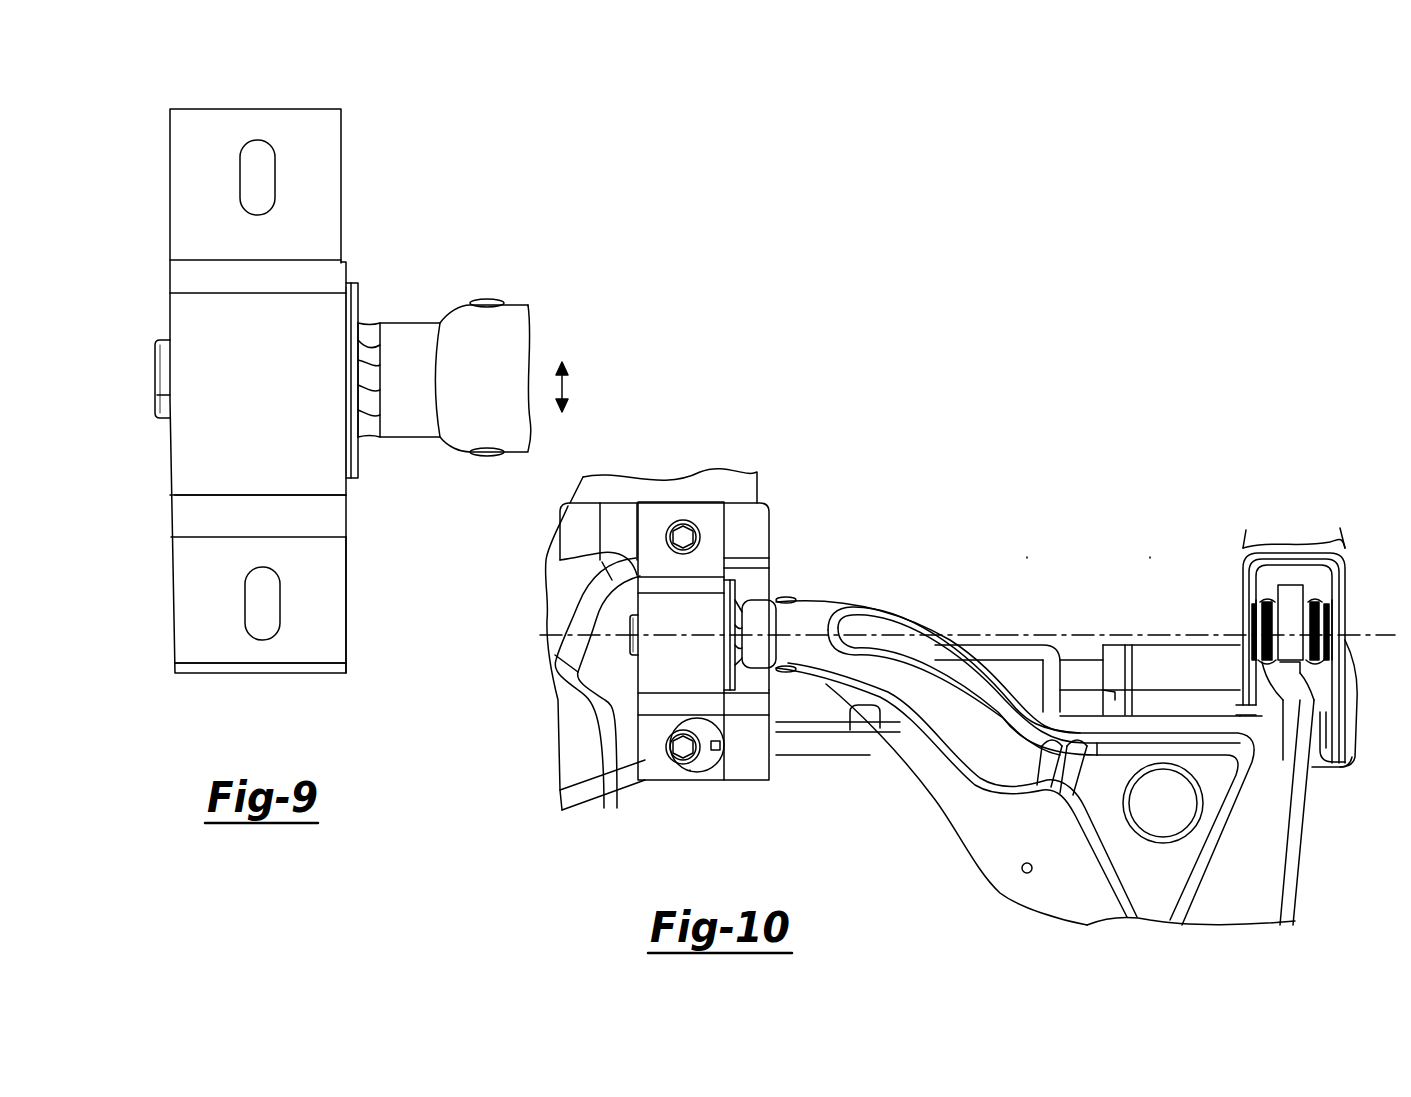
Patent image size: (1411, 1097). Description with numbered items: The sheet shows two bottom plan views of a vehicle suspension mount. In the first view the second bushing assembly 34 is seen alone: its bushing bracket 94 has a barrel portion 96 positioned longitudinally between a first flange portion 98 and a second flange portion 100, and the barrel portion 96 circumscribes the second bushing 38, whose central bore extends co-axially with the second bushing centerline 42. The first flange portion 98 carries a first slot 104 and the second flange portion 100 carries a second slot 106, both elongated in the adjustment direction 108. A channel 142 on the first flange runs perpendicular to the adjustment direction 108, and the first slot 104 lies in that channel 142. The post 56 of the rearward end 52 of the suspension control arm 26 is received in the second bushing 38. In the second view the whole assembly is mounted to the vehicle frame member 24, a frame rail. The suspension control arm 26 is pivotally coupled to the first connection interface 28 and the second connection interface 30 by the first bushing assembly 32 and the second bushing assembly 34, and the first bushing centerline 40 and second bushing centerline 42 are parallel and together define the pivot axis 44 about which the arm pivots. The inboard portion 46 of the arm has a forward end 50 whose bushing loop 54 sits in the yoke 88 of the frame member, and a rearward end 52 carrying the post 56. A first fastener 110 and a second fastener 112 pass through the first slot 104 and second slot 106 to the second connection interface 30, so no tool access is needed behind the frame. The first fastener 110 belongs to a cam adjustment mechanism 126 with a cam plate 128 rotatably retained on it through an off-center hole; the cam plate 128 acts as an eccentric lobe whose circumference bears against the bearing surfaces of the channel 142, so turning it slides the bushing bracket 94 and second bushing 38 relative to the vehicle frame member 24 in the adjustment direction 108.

In FIG. 10, the vehicle frame member 24 is at (568, 556).
In FIG. 9, the suspension control arm 26 is at (538, 332).
In FIG. 10, the suspension control arm 26 is at (1145, 880).
In FIG. 10, the first connection interface 28 is at (1338, 546).
In FIG. 10, the second connection interface 30 is at (752, 528).
In FIG. 10, the first bushing assembly 32 is at (1272, 592).
In FIG. 9, the second bushing assembly 34 is at (362, 638).
In FIG. 10, the second bushing assembly 34 is at (742, 590).
In FIG. 9, the second bushing 38 is at (364, 448).
In FIG. 10, the first bushing centerline 40 is at (1138, 638).
In FIG. 10, the second bushing centerline 42 is at (535, 648).
In FIG. 10, the pivot axis 44 is at (1033, 640).
In FIG. 10, the inboard portion 46 is at (1176, 727).
In FIG. 10, the forward end 50 is at (1290, 690).
In FIG. 9, the rearward end 52 is at (418, 345).
In FIG. 10, the rearward end 52 is at (790, 660).
In FIG. 10, the bushing loop 54 is at (1290, 600).
In FIG. 9, the post 56 is at (158, 374).
In FIG. 10, the post 56 is at (632, 625).
In FIG. 10, the yoke 88 is at (1326, 596).
In FIG. 9, the bushing bracket 94 is at (322, 106).
In FIG. 10, the bushing bracket 94 is at (712, 500).
In FIG. 9, the barrel portion 96 is at (298, 376).
In FIG. 9, the first flange portion 98 is at (318, 525).
In FIG. 9, the second flange portion 100 is at (330, 190).
In FIG. 9, the first slot 104 is at (280, 605).
In FIG. 9, the second slot 106 is at (240, 182).
In FIG. 9, the adjustment direction 108 is at (568, 385).
In FIG. 10, the first fastener 110 is at (680, 747).
In FIG. 10, the second fastener 112 is at (670, 537).
In FIG. 10, the cam adjustment mechanism 126 is at (720, 752).
In FIG. 10, the cam plate 128 is at (698, 772).
In FIG. 9, the channel 142 is at (215, 627).